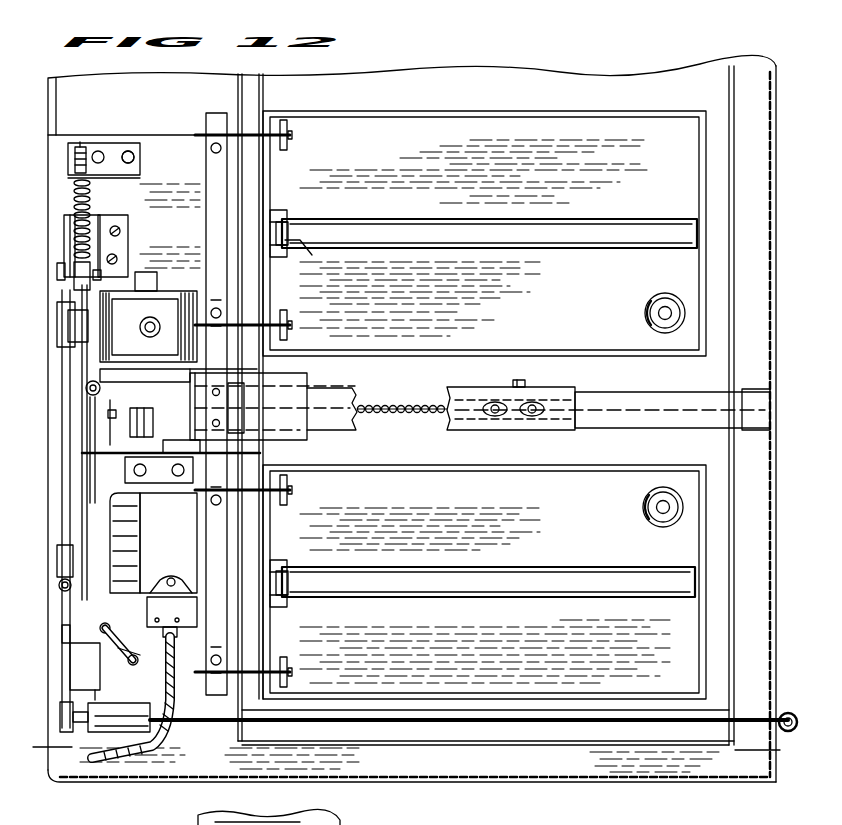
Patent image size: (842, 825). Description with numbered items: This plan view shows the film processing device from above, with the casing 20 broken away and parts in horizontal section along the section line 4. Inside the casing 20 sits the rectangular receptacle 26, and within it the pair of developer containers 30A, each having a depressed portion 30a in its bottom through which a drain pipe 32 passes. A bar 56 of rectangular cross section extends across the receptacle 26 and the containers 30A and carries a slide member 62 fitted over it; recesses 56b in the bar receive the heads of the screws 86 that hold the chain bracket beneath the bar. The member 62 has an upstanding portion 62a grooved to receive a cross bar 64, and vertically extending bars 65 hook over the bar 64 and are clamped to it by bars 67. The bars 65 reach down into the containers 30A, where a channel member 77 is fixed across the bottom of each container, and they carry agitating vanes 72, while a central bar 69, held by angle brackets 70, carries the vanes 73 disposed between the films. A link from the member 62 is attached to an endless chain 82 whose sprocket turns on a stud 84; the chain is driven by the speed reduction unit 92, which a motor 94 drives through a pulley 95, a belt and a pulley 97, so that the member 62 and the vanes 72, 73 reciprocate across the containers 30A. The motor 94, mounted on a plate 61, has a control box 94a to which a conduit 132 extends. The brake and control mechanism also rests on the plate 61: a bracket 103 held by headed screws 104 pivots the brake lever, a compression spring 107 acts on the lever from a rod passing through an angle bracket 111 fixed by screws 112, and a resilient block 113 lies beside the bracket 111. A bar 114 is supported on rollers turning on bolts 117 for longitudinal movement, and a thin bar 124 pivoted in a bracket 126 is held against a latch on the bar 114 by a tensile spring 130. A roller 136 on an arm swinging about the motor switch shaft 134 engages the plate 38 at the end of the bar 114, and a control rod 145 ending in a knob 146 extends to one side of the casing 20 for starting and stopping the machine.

The section line 4- 4 is at (400, 754).
The casing 20 is at (650, 783).
The receptacle 26 is at (611, 742).
The containers 30A is at (511, 341).
The depressed portion 30a is at (647, 330).
The pipe 32 is at (665, 300).
The switch 38 is at (95, 686).
The bar 56 is at (659, 395).
The recesses 56b is at (545, 405).
The plate 61 is at (55, 180).
The member 62 is at (320, 389).
The upstanding portion 62a is at (246, 400).
The bar 64 is at (250, 369).
The vertically extending bars 65 is at (245, 133).
The bars 67 is at (217, 116).
The bar 69 is at (312, 255).
The angle brackets 70 is at (290, 226).
The agitating vanes 72 is at (292, 136).
The agitating vanes 73 is at (278, 213).
The channel member 77 is at (577, 220).
The endless chain 82 is at (406, 405).
The stud 84 is at (522, 383).
The headed screws 86 is at (495, 416).
The speed reduction unit 92 is at (138, 321).
The motor 94 is at (178, 527).
The control box 94a is at (167, 578).
The pulley 95 is at (62, 458).
The pulley 97 is at (55, 322).
The bracket 103 is at (66, 246).
The headed screws 104 is at (118, 258).
The compression coiled spring 107 is at (92, 192).
The angle bracket 111 is at (105, 145).
The screws 112 is at (135, 157).
The block 113 is at (68, 152).
The rod 114 is at (80, 413).
The bolts 117 is at (58, 590).
The bar 124 is at (265, 453).
The bracket 126 is at (155, 478).
The tensile coiled spring 130 is at (113, 445).
The conduit 132 is at (160, 752).
The shaft 134 is at (136, 666).
The roller 136 is at (108, 624).
The rod 145 is at (437, 724).
The knob 146 is at (788, 712).